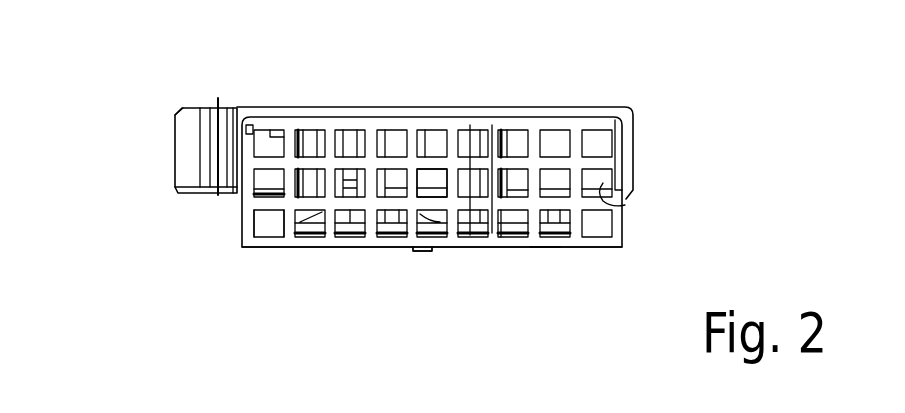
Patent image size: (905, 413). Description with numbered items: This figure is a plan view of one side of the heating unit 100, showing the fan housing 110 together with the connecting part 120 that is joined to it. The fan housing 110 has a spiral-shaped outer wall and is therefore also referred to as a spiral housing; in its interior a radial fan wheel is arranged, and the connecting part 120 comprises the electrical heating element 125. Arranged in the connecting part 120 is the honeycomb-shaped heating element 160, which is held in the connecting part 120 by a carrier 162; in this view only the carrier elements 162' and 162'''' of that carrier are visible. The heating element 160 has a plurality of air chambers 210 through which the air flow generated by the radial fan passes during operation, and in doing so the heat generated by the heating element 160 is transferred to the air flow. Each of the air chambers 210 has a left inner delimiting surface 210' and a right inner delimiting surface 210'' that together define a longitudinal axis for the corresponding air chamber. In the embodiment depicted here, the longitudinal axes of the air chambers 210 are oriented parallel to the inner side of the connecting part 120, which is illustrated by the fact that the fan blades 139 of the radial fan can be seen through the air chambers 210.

The heating unit 100 is at (520, 85).
The fan housing 110 is at (158, 132).
The connecting part 120 is at (660, 136).
The electrical heating element 125 is at (612, 266).
The fan blades 139 is at (424, 187).
The honeycomb-shaped heating element 160 is at (545, 247).
The carrier 162 is at (691, 155).
The carrier element 162' is at (312, 81).
The carrier element 162'''' is at (700, 205).
The air chambers 210 is at (166, 256).
The left inner delimiting surfaces 210' is at (153, 217).
The right inner delimiting surfaces 210'' is at (297, 257).